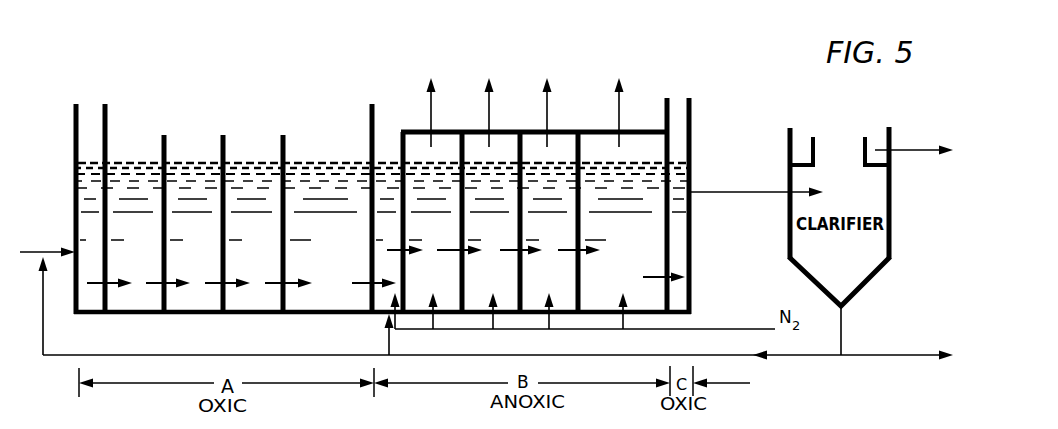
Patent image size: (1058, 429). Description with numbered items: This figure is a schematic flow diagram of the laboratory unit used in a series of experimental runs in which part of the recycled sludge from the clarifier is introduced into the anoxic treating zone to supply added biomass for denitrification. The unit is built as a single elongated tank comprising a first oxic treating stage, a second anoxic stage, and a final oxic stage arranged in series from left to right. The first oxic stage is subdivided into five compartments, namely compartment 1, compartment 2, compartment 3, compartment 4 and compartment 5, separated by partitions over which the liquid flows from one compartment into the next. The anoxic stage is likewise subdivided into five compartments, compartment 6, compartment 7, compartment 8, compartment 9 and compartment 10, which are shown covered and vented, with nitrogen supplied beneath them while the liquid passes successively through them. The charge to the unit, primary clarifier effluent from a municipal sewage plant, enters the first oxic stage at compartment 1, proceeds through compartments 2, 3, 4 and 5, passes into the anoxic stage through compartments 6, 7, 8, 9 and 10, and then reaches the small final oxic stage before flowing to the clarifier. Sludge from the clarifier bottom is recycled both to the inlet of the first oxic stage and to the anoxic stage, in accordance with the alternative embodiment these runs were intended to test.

The compartment 1 is at (106, 243).
The compartment 2 is at (150, 243).
The compartment 3 is at (210, 243).
The compartment 4 is at (270, 243).
The compartment 5 is at (343, 243).
The compartment 6 is at (398, 227).
The compartment 7 is at (445, 227).
The compartment 8 is at (505, 227).
The compartment 9 is at (563, 227).
The compartment 10 is at (635, 240).